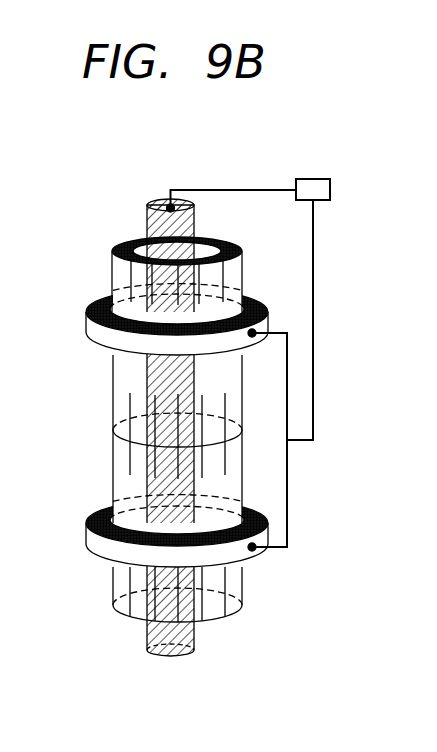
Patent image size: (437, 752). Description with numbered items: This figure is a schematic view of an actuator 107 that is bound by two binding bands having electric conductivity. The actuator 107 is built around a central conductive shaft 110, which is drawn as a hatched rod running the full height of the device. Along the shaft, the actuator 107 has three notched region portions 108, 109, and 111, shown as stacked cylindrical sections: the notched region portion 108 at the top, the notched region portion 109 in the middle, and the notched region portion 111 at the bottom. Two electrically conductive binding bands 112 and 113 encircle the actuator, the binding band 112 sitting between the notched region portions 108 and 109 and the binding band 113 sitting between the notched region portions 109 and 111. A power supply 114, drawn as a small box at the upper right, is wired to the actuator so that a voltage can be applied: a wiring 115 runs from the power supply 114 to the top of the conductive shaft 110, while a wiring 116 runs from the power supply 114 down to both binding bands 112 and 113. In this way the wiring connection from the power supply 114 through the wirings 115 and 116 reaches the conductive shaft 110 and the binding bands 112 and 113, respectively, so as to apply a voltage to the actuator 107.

The actuator 107 is at (205, 417).
The notched region portion 108 is at (77, 250).
The notched region portion 109 is at (98, 393).
The conductive shaft 110 is at (143, 633).
The notched region portion 111 is at (75, 532).
The binding band 112 is at (99, 326).
The binding band 113 is at (99, 541).
The power supply 114 is at (311, 187).
The wiring 115 is at (220, 190).
The wiring 116 is at (313, 263).